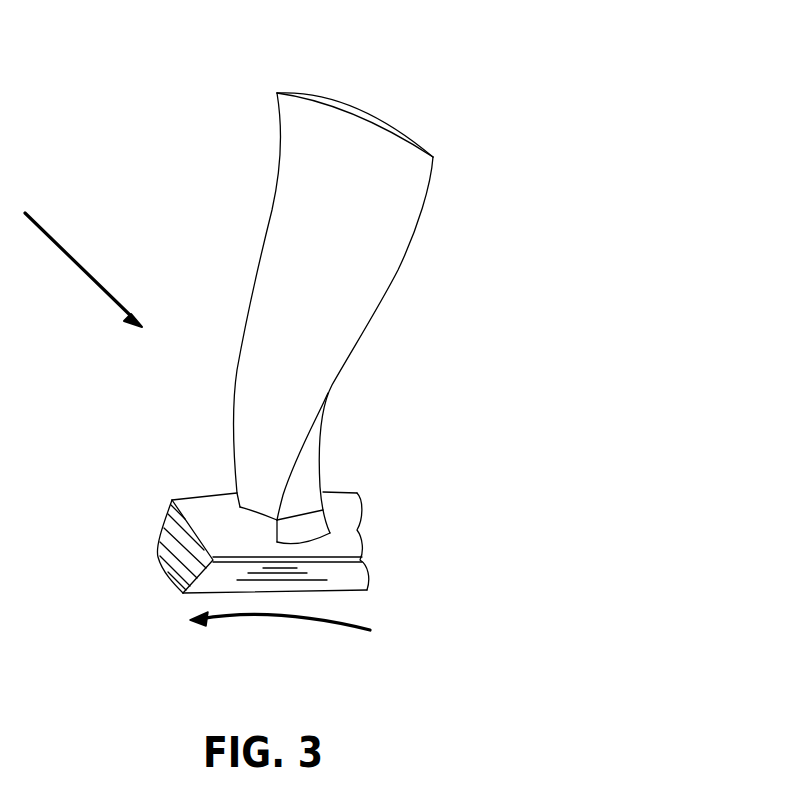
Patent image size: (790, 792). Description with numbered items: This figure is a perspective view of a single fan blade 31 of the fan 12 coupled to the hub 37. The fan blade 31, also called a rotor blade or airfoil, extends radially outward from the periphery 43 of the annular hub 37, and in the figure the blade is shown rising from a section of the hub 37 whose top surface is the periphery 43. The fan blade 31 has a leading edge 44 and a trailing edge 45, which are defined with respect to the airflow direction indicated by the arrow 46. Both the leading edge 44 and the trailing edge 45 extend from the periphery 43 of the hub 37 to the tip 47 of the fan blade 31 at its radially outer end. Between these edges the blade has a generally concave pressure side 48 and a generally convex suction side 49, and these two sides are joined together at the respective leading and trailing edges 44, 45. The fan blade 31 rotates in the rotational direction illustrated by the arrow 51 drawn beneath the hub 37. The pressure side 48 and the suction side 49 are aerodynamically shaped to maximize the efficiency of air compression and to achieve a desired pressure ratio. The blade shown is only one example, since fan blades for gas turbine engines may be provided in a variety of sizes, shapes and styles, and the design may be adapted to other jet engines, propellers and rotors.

The fan 12 is at (472, 178).
The fan blade 31 is at (265, 203).
The hub 37 is at (185, 562).
The periphery 43 is at (207, 512).
The leading edge 44 is at (257, 303).
The trailing edge 45 is at (380, 302).
The arrow indicating airflow direction 46 is at (52, 240).
The tip 47 is at (358, 106).
The pressure side 48 is at (325, 232).
The suction side 49 is at (303, 475).
The arrow indicating rotational direction 51 is at (282, 617).